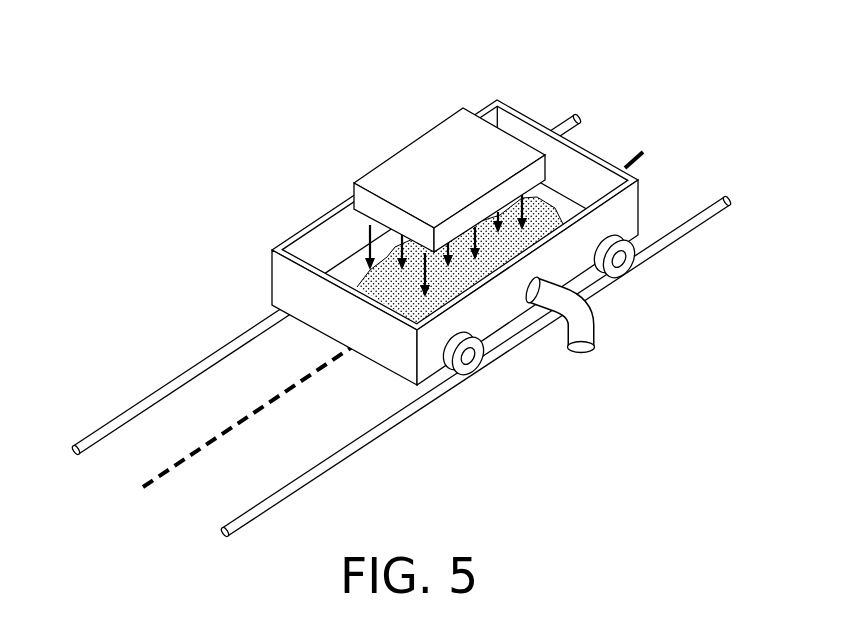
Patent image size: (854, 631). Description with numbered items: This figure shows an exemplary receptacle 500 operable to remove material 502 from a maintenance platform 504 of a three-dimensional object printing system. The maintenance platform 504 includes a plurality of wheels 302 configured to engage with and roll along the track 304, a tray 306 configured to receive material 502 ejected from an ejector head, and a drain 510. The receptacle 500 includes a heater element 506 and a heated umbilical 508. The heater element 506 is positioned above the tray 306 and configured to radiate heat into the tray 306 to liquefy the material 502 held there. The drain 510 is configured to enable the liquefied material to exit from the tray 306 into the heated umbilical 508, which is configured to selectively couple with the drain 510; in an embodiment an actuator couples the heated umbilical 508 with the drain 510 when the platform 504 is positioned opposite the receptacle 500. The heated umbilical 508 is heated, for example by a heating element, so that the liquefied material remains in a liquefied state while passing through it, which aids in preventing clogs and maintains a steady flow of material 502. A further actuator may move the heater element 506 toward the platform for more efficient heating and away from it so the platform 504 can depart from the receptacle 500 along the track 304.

The receptacle 500 is at (654, 362).
The material 502 is at (558, 195).
The maintenance platform 504 is at (397, 77).
The heater element 506 is at (415, 157).
The tray 306 is at (335, 243).
The track 304 is at (183, 372).
The wheels 302 is at (467, 373).
The heated umbilical 508 is at (594, 326).
The drain 510 is at (533, 317).